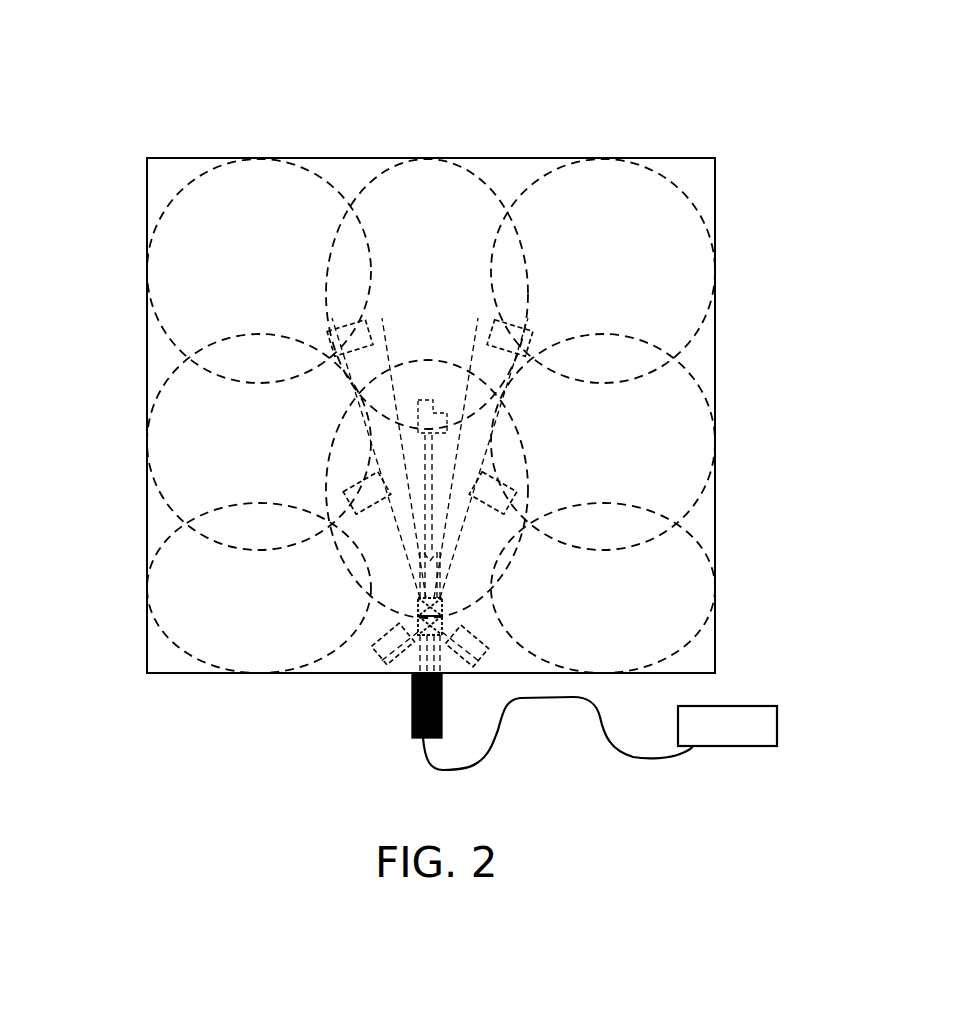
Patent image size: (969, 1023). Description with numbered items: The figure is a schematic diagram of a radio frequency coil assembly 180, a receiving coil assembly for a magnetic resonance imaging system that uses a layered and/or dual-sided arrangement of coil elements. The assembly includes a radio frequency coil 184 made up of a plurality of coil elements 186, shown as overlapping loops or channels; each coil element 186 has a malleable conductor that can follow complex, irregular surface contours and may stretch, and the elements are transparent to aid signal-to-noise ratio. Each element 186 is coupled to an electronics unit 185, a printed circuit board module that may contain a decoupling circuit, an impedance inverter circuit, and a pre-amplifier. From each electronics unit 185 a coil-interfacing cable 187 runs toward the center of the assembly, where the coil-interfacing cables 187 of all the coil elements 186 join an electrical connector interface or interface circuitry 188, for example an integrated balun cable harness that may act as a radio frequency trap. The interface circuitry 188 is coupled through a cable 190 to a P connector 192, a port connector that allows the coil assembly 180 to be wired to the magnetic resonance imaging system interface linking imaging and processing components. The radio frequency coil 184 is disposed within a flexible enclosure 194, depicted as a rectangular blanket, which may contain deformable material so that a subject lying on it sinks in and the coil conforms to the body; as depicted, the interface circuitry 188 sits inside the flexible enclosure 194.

The radio frequency coil assembly 180 is at (275, 38).
The radio frequency coil 184 is at (337, 181).
The electronics unit 185 is at (512, 323).
The coil element 186 is at (473, 175).
The coil-interfacing cable 187 is at (466, 442).
The interface circuitry 188 is at (412, 715).
The cable 190 is at (553, 697).
The P connector 192 is at (777, 723).
The flexible enclosure 194 is at (147, 522).